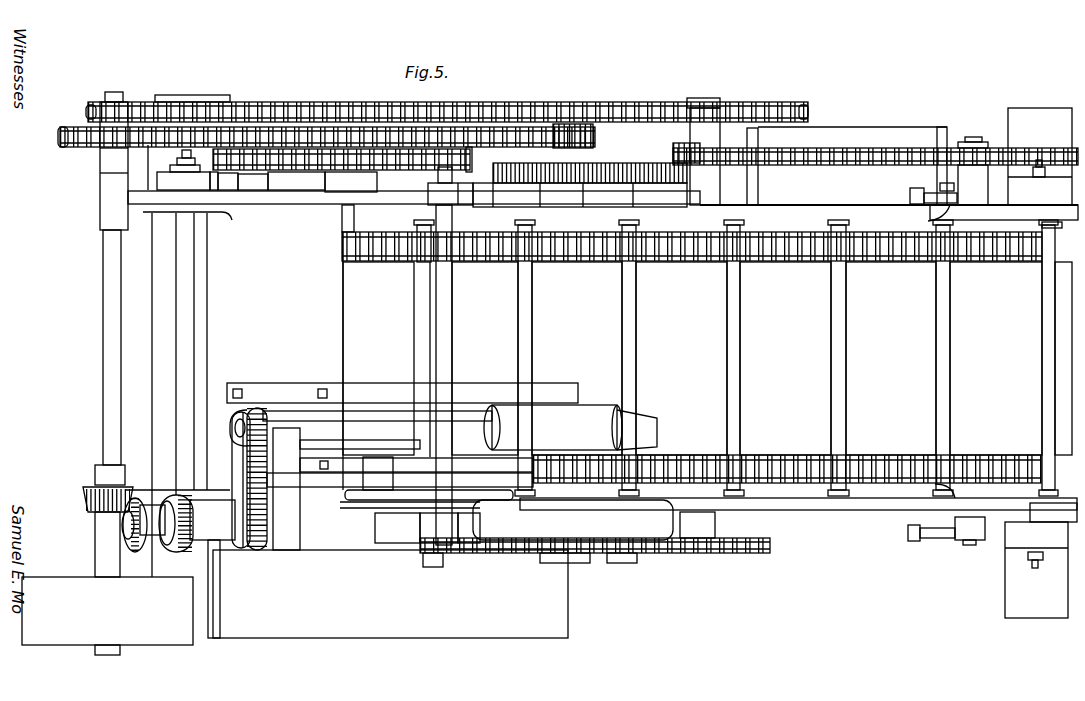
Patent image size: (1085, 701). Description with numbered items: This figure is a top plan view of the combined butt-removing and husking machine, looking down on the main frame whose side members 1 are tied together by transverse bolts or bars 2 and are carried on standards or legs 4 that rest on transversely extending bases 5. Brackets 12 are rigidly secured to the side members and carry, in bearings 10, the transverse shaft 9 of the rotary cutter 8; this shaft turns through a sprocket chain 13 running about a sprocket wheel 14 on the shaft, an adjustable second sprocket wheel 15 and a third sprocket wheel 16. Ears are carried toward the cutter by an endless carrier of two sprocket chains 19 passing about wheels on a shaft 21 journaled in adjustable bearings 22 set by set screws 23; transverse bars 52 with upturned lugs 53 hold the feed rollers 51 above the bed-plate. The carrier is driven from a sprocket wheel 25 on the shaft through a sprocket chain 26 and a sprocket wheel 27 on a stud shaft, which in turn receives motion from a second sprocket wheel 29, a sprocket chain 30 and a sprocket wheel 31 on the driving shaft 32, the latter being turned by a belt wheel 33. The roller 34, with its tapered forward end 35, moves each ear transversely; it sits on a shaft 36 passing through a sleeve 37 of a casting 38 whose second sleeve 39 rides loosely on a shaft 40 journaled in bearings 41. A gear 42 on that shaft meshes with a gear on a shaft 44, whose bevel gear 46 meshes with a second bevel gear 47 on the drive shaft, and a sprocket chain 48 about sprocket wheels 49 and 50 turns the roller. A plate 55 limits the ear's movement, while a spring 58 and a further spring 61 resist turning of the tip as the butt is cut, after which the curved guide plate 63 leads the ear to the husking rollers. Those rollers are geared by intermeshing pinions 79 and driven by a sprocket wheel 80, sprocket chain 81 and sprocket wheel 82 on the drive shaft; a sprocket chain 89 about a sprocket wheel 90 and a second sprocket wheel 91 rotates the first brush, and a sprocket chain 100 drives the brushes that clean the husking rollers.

The side members 1 is at (845, 212).
The transverse bolts or bars 2 is at (1035, 566).
The standards or legs 4 is at (1030, 190).
The supporting blocks or bases 5 is at (224, 102).
The rotary cutter 8 is at (513, 502).
The shaft 9 is at (454, 322).
The bearings 10 is at (428, 203).
The brackets 12 is at (330, 200).
The sprocket chain 13 is at (267, 181).
The sprocket wheel 14 is at (472, 170).
The second sprocket wheel 15 is at (183, 170).
The third sprocket wheel 16 is at (341, 170).
The sprocket chains 19 is at (510, 261).
The shaft 21 is at (972, 137).
The adjustable bearings 22 is at (962, 357).
The set screws 23 is at (910, 195).
The sprocket wheel 25 is at (1054, 140).
The sprocket chain 26 is at (820, 165).
The sprocket wheel 27 is at (678, 142).
The second sprocket wheel 29 is at (807, 113).
The sprocket chain 30 is at (632, 98).
The sprocket wheel 31 is at (94, 104).
The driving shaft 32 is at (102, 430).
The belt wheel 33 is at (60, 584).
The roller 34 is at (592, 408).
The tapered forward end 35 is at (650, 426).
The shaft 36 is at (230, 432).
The sleeve 37 is at (496, 416).
The casting 38 is at (288, 490).
The second sleeve 39 is at (340, 525).
The shaft 40 is at (404, 552).
The bearings 41 is at (368, 540).
The gear 42 is at (182, 552).
The shaft 44 is at (122, 522).
The bevel gear 46 is at (122, 530).
The second bevel gear 47 is at (83, 496).
The sprocket chain 48 is at (256, 466).
The sprocket wheel 49 is at (250, 405).
The sprocket wheel 50 is at (258, 550).
The rollers 51 is at (638, 390).
The transverse bars 52 is at (640, 260).
The lugs 53 is at (524, 221).
The plate 55 is at (655, 520).
The spring 58 is at (476, 383).
The spring 61 is at (502, 466).
The curved guide plate 63 is at (344, 330).
The pinion 79 is at (562, 166).
The sprocket wheel 80 is at (594, 138).
The sprocket chain 81 is at (362, 128).
The sprocket wheel 82 is at (62, 134).
The sprocket chain 89 is at (630, 563).
The sprocket wheel 90 is at (552, 563).
The second sprocket wheel 91 is at (770, 545).
The sprocket chain 100 is at (436, 567).